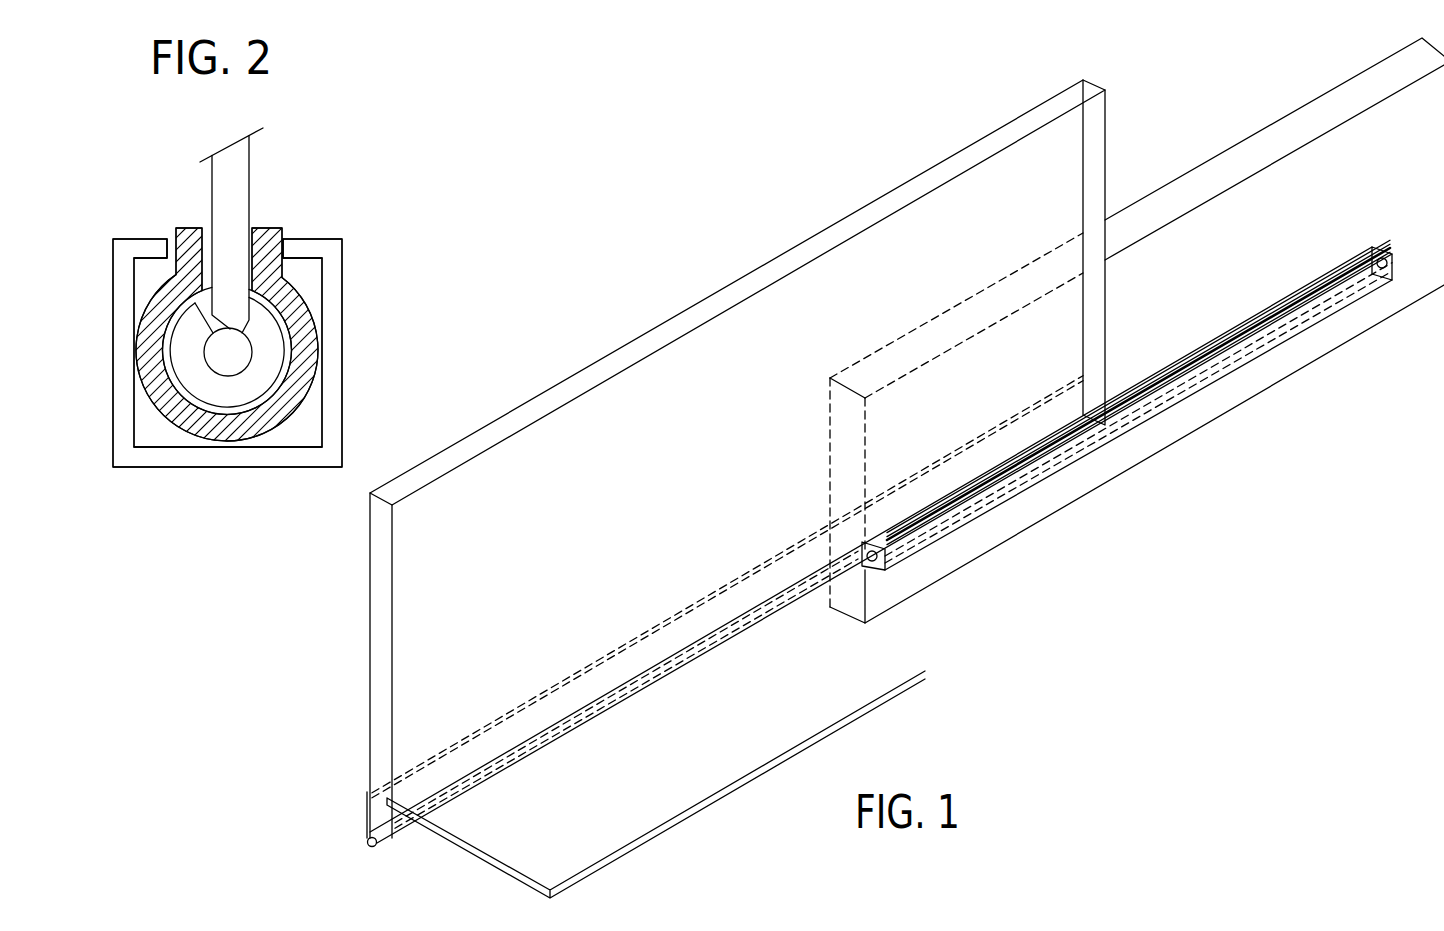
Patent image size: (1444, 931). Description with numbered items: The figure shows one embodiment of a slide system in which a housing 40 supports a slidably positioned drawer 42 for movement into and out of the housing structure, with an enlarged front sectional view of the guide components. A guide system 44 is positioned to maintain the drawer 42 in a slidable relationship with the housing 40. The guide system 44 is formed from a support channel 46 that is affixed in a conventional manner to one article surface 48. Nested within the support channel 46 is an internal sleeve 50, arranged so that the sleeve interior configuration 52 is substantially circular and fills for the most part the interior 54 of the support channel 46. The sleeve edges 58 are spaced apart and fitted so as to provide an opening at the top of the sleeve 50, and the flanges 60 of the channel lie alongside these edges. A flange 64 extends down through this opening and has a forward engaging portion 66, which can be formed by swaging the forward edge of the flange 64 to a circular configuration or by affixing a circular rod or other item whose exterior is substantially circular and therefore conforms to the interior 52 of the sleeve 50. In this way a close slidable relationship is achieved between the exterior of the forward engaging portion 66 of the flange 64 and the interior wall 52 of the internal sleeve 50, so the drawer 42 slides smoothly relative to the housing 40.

In FIG. 1, the housing 40 is at (1186, 187).
In FIG. 1, the drawer 42 is at (633, 395).
In FIG. 1, the guide system 44 is at (950, 540).
In FIG. 2, the guide system 44 is at (146, 483).
In FIG. 2, the support channel 46 is at (113, 420).
In FIG. 1, the article surface 48 is at (1224, 281).
In FIG. 2, the internal sleeve 50 is at (296, 290).
In FIG. 2, the sleeve interior configuration 52 is at (252, 227).
In FIG. 2, the interior of support channel 54 is at (152, 438).
In FIG. 2, the sleeve edges 58 is at (193, 228).
In FIG. 2, the channel flanges 60 is at (165, 248).
In FIG. 2, the flange 64 is at (227, 165).
In FIG. 2, the forward engaging portion 66 is at (168, 348).